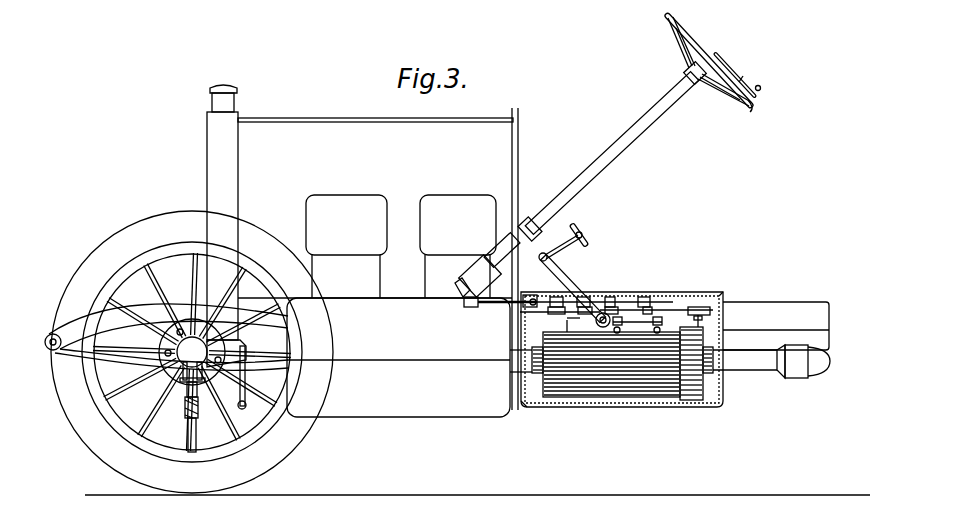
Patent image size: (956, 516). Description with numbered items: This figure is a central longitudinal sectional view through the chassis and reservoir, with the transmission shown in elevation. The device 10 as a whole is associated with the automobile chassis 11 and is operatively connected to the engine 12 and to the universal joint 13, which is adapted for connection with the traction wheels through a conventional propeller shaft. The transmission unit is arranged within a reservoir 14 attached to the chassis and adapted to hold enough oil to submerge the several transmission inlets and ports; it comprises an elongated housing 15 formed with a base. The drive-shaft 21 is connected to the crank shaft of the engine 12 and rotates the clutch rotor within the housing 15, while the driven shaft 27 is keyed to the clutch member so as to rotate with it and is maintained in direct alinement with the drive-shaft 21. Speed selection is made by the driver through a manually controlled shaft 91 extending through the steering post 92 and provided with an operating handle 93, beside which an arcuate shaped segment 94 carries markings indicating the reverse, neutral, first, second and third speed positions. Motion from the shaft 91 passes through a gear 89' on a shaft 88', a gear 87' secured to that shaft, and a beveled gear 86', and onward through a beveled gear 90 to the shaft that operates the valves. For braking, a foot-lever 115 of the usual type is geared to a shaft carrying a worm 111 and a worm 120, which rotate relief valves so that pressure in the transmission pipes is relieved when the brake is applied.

The device 10 is at (708, 288).
The automobile chassis 11 is at (797, 310).
The engine 12 is at (360, 203).
The universal joint 13 is at (800, 370).
The reservoir 14 is at (724, 297).
The housing 15 is at (630, 377).
The drive-shaft 21 is at (527, 372).
The driven shaft 27 is at (762, 366).
The beveled gear 86' is at (573, 290).
The gear 87' is at (559, 290).
The shaft 88' is at (507, 326).
The gear 89' is at (463, 323).
The beveled gear 90 is at (455, 287).
The manually controlled shaft 91 is at (712, 53).
The steering post 92 is at (575, 182).
The operating handle 93 is at (738, 68).
The arcuate shaped segment 94 is at (750, 112).
The worm 111 is at (661, 316).
The foot-lever 115 is at (583, 236).
The worm 120 is at (618, 316).